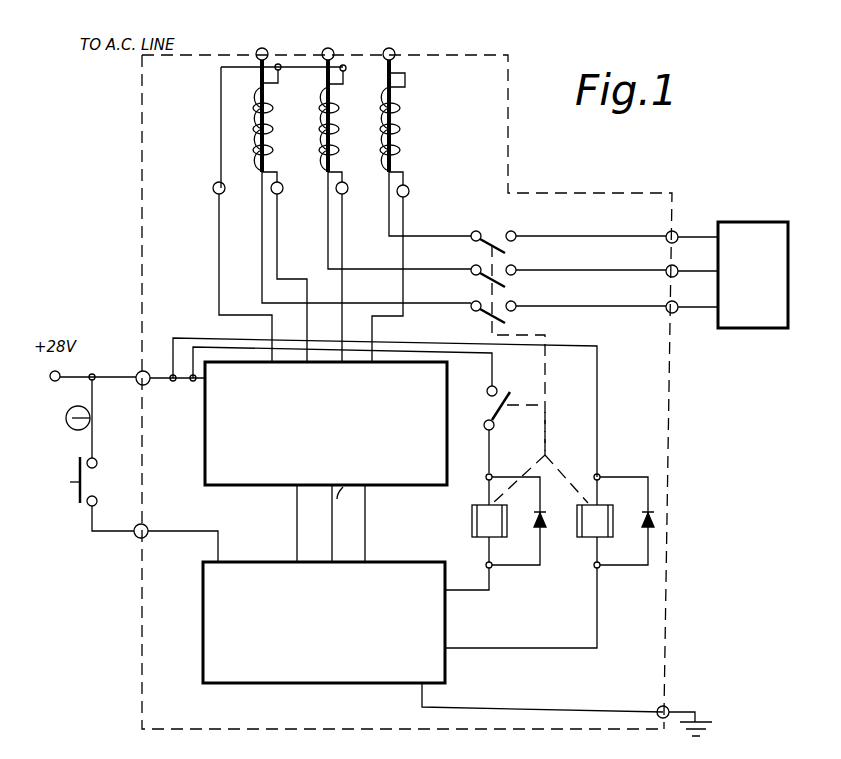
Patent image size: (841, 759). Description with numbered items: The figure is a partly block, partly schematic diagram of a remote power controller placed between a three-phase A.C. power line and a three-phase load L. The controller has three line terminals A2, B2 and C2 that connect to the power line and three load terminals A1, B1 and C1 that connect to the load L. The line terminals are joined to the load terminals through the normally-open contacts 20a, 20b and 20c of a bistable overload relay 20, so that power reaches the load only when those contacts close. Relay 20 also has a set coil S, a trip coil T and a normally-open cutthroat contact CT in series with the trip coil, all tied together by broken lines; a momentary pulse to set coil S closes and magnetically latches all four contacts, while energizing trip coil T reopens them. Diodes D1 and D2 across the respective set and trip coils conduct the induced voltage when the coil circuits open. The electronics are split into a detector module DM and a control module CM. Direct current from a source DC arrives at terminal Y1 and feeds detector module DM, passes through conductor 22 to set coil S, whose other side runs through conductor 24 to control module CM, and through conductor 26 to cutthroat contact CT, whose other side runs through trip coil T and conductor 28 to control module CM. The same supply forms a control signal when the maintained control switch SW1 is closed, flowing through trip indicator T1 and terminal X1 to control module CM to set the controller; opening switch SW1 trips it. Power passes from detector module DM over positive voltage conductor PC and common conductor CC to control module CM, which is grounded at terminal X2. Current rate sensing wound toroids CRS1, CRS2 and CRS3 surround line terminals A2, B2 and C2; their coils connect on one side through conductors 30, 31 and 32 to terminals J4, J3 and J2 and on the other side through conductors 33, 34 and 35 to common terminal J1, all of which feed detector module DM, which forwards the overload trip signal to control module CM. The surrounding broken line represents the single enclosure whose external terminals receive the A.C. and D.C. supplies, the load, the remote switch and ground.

The overload relay 20 is at (562, 434).
The normally-open contact 20a is at (512, 244).
The normally-open contact 20b is at (512, 278).
The normally-open contact 20c is at (512, 314).
The conductor 22 is at (173, 338).
The conductor 24 is at (597, 628).
The conductor 26 is at (487, 388).
The conductor 28 is at (460, 590).
The conductor 30 is at (406, 172).
The conductor 31 is at (345, 172).
The conductor 32 is at (280, 172).
The conductor 33 is at (405, 82).
The conductor 34 is at (344, 81).
The conductor 35 is at (279, 80).
The current rate sensing wound toroid CRS1 is at (400, 128).
The current rate sensing wound toroid CRS2 is at (340, 133).
The current rate sensing wound toroid CRS3 is at (249, 118).
The common terminal J1 is at (213, 183).
The terminal J2 is at (281, 193).
The terminal J3 is at (346, 193).
The terminal J4 is at (407, 196).
The load terminal A1 is at (677, 232).
The load terminal B1 is at (677, 266).
The load terminal C1 is at (677, 302).
The line terminal A2 is at (391, 48).
The line terminal B2 is at (330, 48).
The line terminal C2 is at (264, 48).
The three-phase load L is at (762, 222).
The detector module DM is at (205, 437).
The control module CM is at (203, 607).
The positive voltage conductor PC is at (297, 530).
The common conductor CC is at (365, 514).
The cutthroat contact CT is at (504, 392).
The trip coil T is at (489, 518).
The set coil S is at (595, 518).
The diode D1 is at (637, 520).
The diode D2 is at (546, 522).
The terminal Y1 is at (136, 374).
The terminal X1 is at (134, 527).
The terminal X2 is at (668, 707).
The direct current source DC is at (66, 391).
The trip indicator T1 is at (70, 428).
The control switch SW1 is at (70, 482).